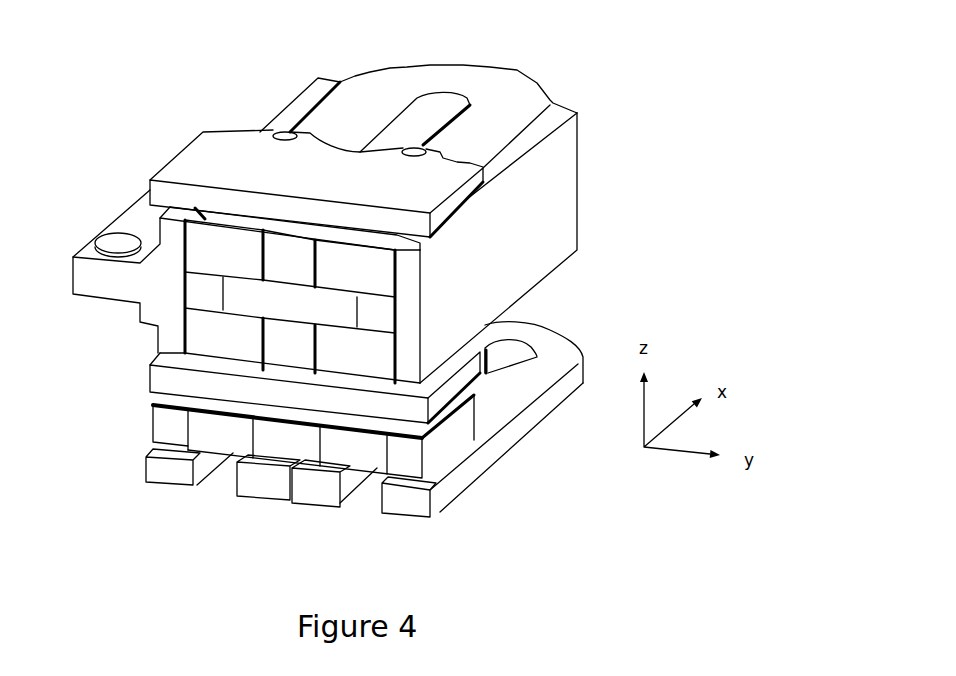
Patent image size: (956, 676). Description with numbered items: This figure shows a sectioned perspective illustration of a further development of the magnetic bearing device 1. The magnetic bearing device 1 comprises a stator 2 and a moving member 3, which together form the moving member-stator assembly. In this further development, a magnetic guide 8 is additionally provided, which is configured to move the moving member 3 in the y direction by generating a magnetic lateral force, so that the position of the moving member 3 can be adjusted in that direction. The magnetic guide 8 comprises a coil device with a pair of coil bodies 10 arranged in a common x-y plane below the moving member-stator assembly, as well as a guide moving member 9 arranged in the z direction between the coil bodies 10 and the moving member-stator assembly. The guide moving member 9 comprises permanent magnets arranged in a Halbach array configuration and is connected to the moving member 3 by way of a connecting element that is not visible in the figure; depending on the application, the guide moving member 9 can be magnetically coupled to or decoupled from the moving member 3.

The magnetic bearing device 1 is at (160, 82).
The stator 2 is at (624, 208).
The moving member 3 is at (470, 383).
The magnetic guide 8 is at (568, 485).
The guide moving member 9 is at (440, 447).
The coil bodies 10 is at (345, 480).